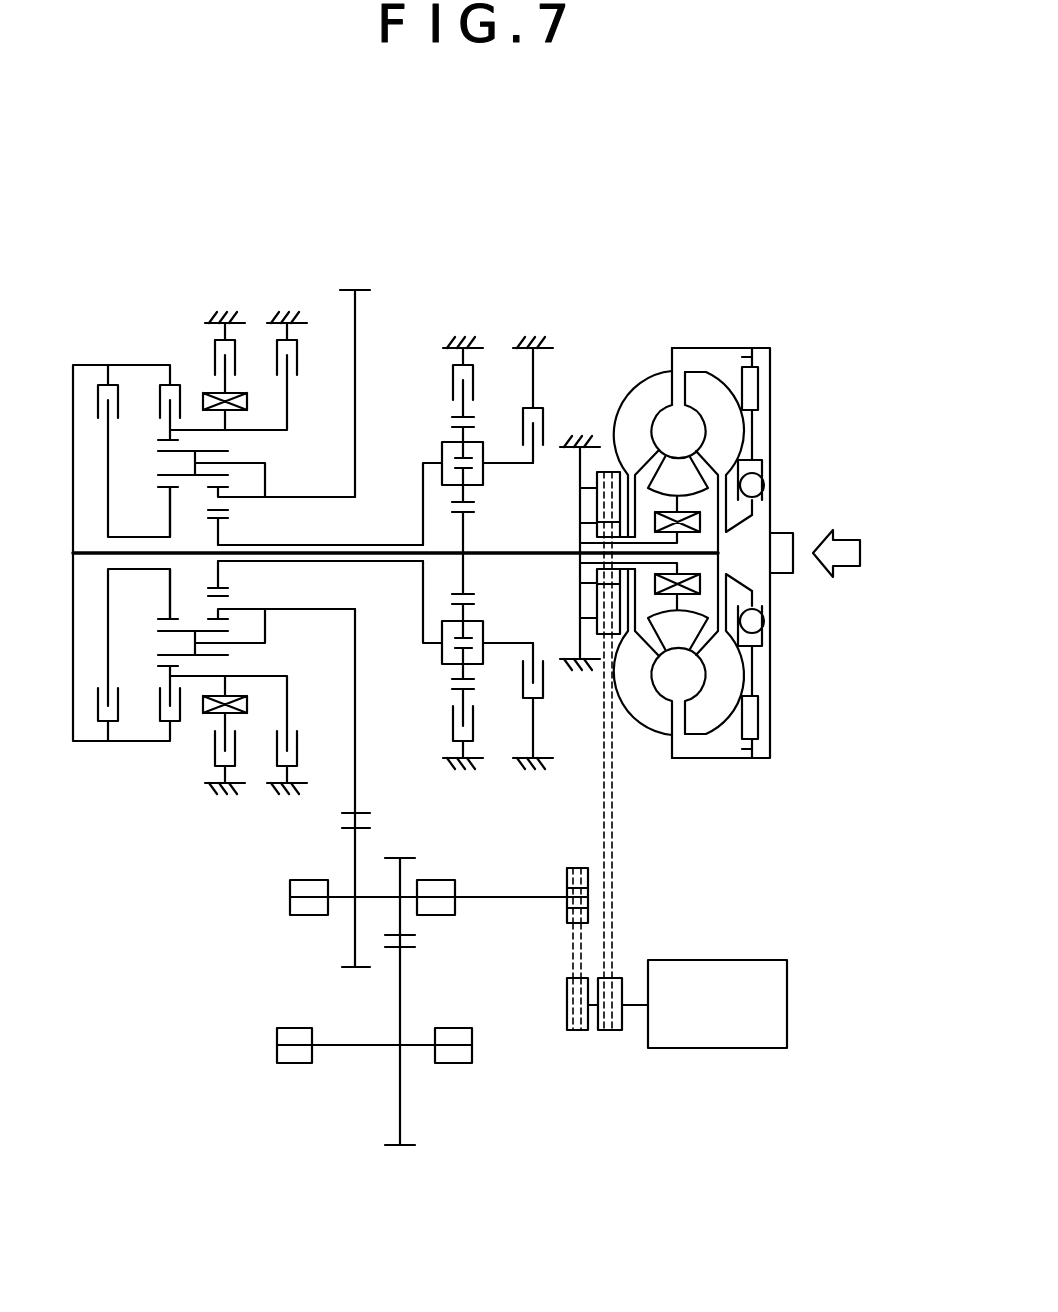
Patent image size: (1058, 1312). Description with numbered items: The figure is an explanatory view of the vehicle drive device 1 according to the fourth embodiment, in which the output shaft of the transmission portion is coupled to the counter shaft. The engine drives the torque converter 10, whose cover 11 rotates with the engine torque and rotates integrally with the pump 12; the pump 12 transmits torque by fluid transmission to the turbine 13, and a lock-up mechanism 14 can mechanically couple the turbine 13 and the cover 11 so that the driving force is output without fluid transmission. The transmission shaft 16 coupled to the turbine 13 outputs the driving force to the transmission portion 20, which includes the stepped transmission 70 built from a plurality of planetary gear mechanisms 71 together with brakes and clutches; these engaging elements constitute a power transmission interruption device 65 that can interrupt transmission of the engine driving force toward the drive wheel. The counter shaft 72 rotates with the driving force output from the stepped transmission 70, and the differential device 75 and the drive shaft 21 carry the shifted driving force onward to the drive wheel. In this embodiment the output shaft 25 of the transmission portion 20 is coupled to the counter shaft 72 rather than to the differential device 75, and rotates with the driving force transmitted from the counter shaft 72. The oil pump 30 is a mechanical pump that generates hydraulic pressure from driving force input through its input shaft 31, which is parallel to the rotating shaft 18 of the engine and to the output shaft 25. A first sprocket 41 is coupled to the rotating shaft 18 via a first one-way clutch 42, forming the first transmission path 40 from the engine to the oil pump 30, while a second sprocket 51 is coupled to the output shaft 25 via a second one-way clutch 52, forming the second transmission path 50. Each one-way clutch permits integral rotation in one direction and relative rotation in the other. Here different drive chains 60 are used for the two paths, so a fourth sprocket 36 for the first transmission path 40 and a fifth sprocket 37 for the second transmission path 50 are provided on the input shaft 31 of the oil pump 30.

The vehicle drive device 1 is at (372, 196).
The torque converter 10 is at (723, 413).
The cover 11 is at (755, 348).
The pump 12 is at (648, 375).
The turbine 13 is at (712, 375).
The lock-up mechanism 14 is at (758, 388).
The transmission shaft 16 is at (521, 562).
The rotating shaft of the engine 18 is at (607, 470).
The transmission portion 20 is at (347, 1000).
The drive shaft 21 is at (341, 1045).
The output shaft of the transmission portion 25 is at (475, 895).
The oil pump 30 is at (722, 1050).
The input shaft 31 is at (633, 1003).
The fourth sprocket 36 is at (617, 1032).
The fifth sprocket 37 is at (575, 1032).
The first transmission path 40 is at (657, 800).
The first sprocket 41 is at (597, 488).
The first one-way clutch 42 is at (597, 523).
The second transmission path 50 is at (530, 926).
The second sprocket 51 is at (575, 868).
The second one-way clutch 52 is at (575, 890).
The drive chain 60 is at (575, 962).
The power transmission interruption device 65 is at (118, 305).
The stepped transmission 70 is at (196, 249).
The planetary gear mechanism 71 is at (282, 454).
The counter shaft 72 is at (370, 895).
The differential device 75 is at (348, 1116).